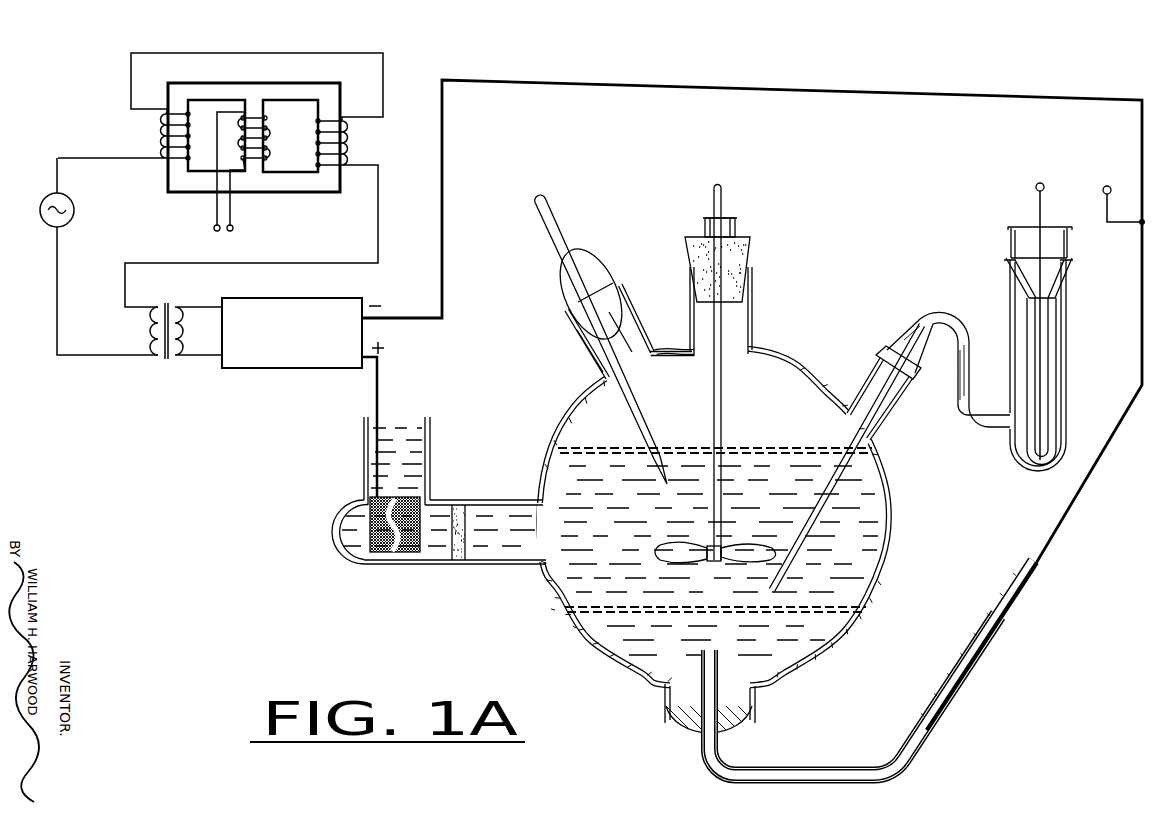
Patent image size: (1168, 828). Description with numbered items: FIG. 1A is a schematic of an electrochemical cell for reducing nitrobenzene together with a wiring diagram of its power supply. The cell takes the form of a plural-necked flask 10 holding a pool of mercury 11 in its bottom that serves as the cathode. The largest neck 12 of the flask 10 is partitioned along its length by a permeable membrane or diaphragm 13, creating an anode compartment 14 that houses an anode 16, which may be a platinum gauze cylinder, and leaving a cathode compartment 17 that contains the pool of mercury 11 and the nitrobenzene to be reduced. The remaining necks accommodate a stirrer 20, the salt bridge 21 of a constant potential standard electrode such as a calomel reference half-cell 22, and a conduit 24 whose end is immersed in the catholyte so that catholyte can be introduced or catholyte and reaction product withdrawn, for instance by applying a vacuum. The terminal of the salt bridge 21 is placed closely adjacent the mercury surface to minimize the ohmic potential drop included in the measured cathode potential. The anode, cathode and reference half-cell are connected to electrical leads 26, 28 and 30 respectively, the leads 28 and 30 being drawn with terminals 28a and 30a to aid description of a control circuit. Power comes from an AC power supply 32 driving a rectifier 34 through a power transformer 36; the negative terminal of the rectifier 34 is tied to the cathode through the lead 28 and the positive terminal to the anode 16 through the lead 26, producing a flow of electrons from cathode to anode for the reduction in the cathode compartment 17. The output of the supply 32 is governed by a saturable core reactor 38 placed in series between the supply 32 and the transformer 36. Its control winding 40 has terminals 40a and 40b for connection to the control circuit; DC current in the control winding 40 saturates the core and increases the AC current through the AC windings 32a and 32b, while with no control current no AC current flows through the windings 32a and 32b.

The plural-necked flask 10 is at (565, 415).
The pool of mercury 11 is at (645, 607).
The largest neck 12 is at (503, 568).
The permeable membrane or diaphragm 13 is at (463, 542).
The anode compartment 14 is at (440, 565).
The anode 16 is at (397, 542).
The cathode compartment 17 is at (575, 620).
The stirrer 20 is at (667, 547).
The salt bridge 21 is at (798, 520).
The calomel reference half-cell 22 is at (1037, 416).
The conduit 24 is at (553, 224).
The electrical lead 26 is at (378, 389).
The electrical lead 28 is at (1053, 530).
The terminal 28a is at (1108, 186).
The electrical lead 30 is at (1037, 206).
The terminal 30a is at (1040, 183).
The AC power supply 32 is at (43, 220).
The AC winding 32a is at (167, 134).
The AC winding 32b is at (345, 138).
The rectifier 34 is at (307, 305).
The power transformer 36 is at (172, 302).
The saturable core reactor 38 is at (293, 95).
The control winding 40 is at (260, 153).
The terminal 40a is at (214, 228).
The terminal 40b is at (233, 228).